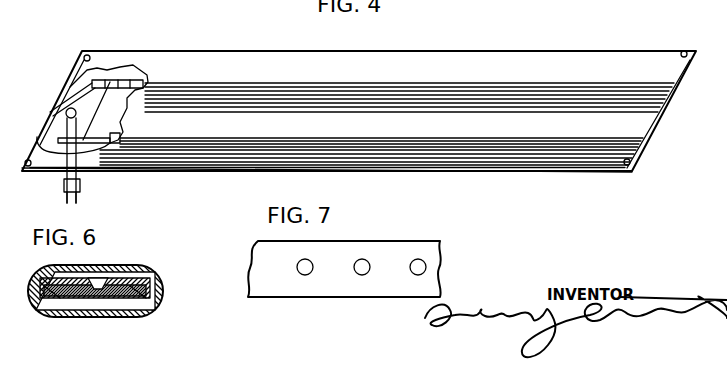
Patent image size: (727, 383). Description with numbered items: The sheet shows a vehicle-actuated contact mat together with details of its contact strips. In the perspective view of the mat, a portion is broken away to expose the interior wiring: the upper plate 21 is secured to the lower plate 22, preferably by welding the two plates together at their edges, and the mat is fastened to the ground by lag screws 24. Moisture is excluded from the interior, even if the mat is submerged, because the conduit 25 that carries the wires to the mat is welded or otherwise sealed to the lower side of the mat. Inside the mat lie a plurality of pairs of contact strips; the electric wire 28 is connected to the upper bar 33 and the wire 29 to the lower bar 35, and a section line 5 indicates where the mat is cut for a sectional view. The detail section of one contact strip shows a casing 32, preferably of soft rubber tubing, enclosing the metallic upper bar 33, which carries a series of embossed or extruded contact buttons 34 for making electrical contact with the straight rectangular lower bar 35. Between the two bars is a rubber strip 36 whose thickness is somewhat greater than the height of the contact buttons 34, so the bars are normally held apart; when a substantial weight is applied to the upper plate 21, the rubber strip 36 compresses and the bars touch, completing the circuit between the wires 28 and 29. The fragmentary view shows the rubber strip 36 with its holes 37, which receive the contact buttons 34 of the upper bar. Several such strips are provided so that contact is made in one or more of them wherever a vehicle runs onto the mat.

In FIG. 4, the section line 5- 5 is at (463, 125).
In FIG. 4, the upper plate 21 is at (325, 52).
In FIG. 4, the lower plate 22 is at (530, 173).
In FIG. 4, the lag screws 24 is at (683, 52).
In FIG. 4, the conduit 25 is at (81, 184).
In FIG. 4, the electric wire 28 is at (77, 199).
In FIG. 4, the wire 29 is at (67, 198).
In FIG. 4, the casing 32 is at (147, 87).
In FIG. 6, the casing 32 is at (112, 317).
In FIG. 4, the upper bar 33 is at (127, 82).
In FIG. 6, the upper bar 33 is at (150, 279).
In FIG. 6, the contact buttons 34 is at (108, 270).
In FIG. 4, the lower bar 35 is at (66, 112).
In FIG. 6, the lower bar 35 is at (72, 317).
In FIG. 6, the rubber strip 36 is at (157, 310).
In FIG. 7, the rubber strip 36 is at (445, 247).
In FIG. 7, the holes 37 is at (360, 276).